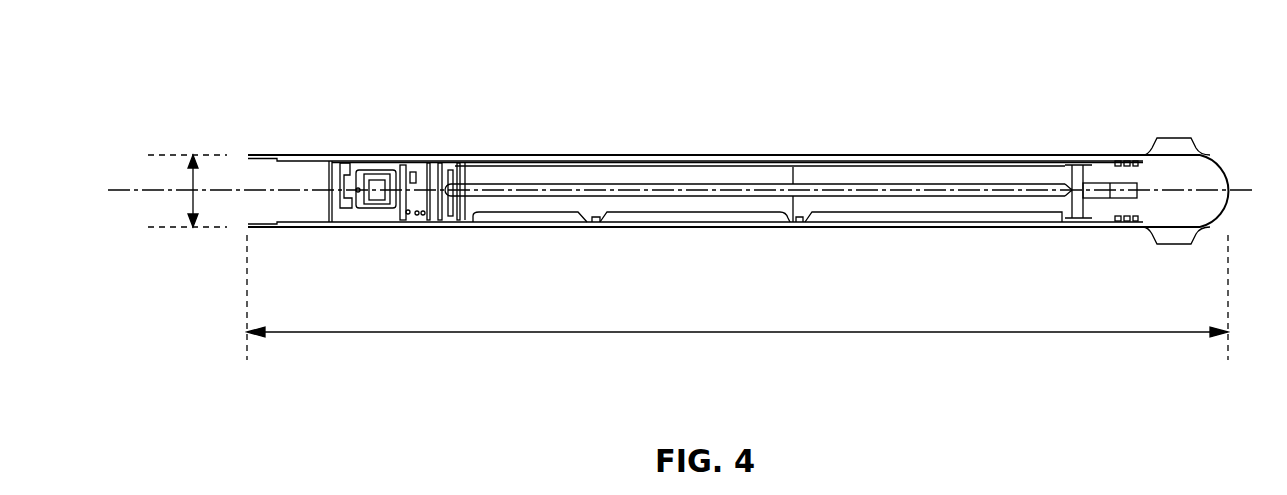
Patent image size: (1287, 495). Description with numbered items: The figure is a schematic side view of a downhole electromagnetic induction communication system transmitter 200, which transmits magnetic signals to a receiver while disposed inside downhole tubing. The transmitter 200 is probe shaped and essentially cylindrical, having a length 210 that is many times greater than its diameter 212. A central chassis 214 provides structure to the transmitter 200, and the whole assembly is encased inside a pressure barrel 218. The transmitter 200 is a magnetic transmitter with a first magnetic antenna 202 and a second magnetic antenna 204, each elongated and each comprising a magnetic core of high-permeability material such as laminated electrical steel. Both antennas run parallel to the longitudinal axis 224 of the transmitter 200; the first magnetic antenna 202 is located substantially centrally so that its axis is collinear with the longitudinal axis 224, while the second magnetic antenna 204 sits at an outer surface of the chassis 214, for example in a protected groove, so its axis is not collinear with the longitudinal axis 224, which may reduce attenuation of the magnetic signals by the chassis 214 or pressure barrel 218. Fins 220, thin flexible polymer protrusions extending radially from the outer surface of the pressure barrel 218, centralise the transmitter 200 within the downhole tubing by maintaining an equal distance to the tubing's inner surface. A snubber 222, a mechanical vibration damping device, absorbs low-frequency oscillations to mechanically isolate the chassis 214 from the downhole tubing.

The downhole electromagnetic induction communication system transmitter 200 is at (600, 82).
The first magnetic antenna 202 is at (605, 191).
The second magnetic antenna 204 is at (735, 165).
The length 210 is at (688, 333).
The diameter 212 is at (185, 195).
The central chassis 214 is at (900, 200).
The pressure barrel 218 is at (817, 224).
The fins 220 is at (1172, 148).
The snubber 222 is at (378, 197).
The longitudinal axis 224 is at (1257, 183).